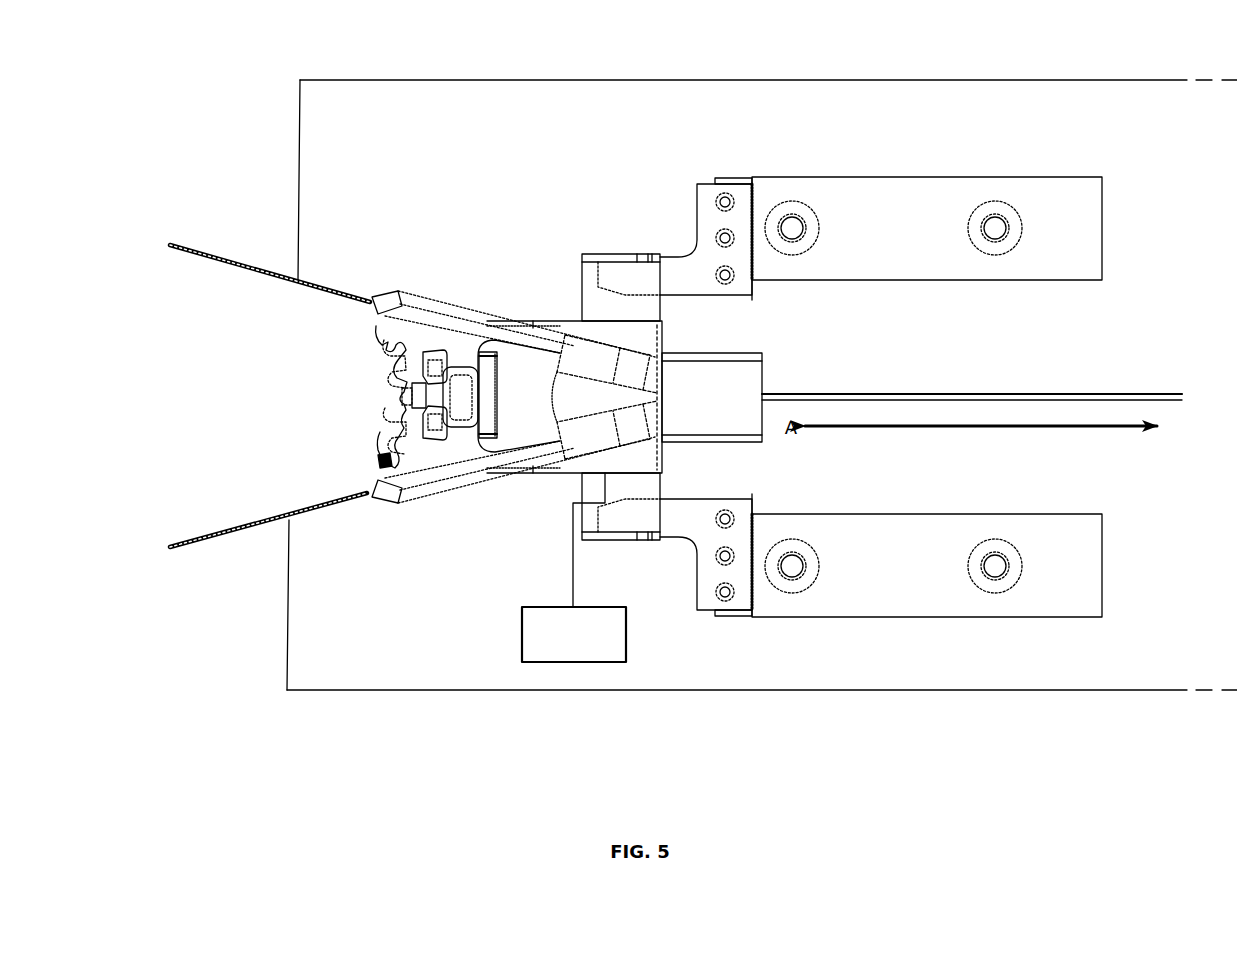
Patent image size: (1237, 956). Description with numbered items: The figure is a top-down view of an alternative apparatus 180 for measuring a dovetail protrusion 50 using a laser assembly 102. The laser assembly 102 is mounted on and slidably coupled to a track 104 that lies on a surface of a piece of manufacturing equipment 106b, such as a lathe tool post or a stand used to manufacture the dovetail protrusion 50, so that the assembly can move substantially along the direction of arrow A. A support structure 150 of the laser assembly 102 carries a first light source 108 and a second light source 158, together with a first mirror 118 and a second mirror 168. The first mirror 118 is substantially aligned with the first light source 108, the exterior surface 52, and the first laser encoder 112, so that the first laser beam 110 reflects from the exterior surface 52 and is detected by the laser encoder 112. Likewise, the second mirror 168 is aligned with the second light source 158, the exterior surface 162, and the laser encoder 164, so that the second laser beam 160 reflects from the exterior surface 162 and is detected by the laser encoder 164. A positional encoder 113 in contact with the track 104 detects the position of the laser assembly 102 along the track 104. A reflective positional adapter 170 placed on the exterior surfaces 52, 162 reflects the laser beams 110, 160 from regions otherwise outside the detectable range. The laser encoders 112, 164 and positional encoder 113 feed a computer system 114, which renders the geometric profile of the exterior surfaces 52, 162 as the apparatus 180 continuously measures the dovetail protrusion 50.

The dovetail protrusion 50 is at (365, 369).
The exterior surface 52 is at (432, 357).
The laser assembly 102 is at (605, 204).
The track 104 is at (965, 394).
The manufacturing equipment 106b is at (452, 79).
The first light source 108 is at (598, 347).
The first laser beam 110 is at (517, 343).
The first laser encoder 112 is at (564, 352).
The positional encoder 113 is at (744, 424).
The computer system 114 is at (557, 645).
The first mirror 118 is at (390, 299).
The support structure 150 is at (752, 179).
The second light source 158 is at (607, 440).
The second laser beam 160 is at (512, 460).
The exterior surface 162 is at (437, 443).
The second laser encoder 164 is at (564, 442).
The second mirror 168 is at (382, 497).
The reflective positional adapter 170 is at (380, 462).
The apparatus 180 is at (848, 705).